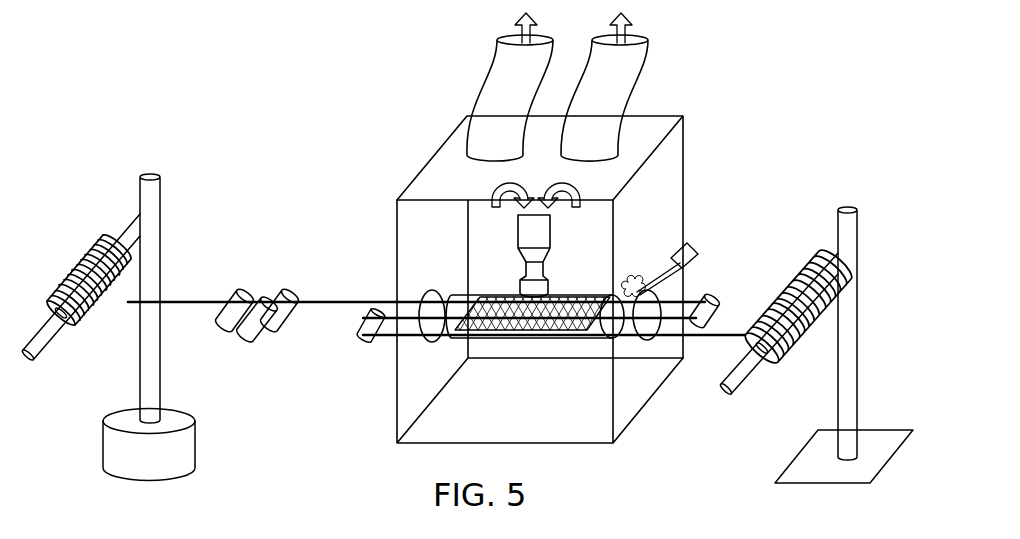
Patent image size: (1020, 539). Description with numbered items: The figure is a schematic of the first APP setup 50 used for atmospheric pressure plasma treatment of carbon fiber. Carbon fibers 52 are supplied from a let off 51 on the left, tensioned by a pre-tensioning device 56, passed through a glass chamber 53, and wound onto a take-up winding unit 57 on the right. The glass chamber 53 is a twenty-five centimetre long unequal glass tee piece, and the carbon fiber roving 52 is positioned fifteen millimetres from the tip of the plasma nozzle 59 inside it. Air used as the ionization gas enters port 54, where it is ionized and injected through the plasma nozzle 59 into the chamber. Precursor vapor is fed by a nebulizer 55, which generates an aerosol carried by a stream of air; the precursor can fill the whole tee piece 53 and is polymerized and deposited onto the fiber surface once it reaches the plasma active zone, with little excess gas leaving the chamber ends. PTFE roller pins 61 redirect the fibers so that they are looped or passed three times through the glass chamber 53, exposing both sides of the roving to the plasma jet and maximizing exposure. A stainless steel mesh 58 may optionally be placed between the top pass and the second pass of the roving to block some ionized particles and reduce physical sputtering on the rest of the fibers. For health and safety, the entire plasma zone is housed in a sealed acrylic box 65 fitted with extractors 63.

The first APP setup 50 is at (751, 85).
The let off 51 is at (53, 248).
The carbon fibers 52 is at (328, 302).
The glass chamber 53 is at (597, 336).
The port 54 is at (492, 190).
The nebulizer 55 is at (693, 245).
The pre-tensioning device 56 is at (259, 352).
The take-up winding unit 57 is at (768, 399).
The stainless steel mesh 58 is at (530, 328).
The plasma nozzle 59 is at (548, 272).
The PTFE roller pins 61 is at (363, 340).
The extractors 63 is at (592, 106).
The sealed acrylic box 65 is at (415, 435).